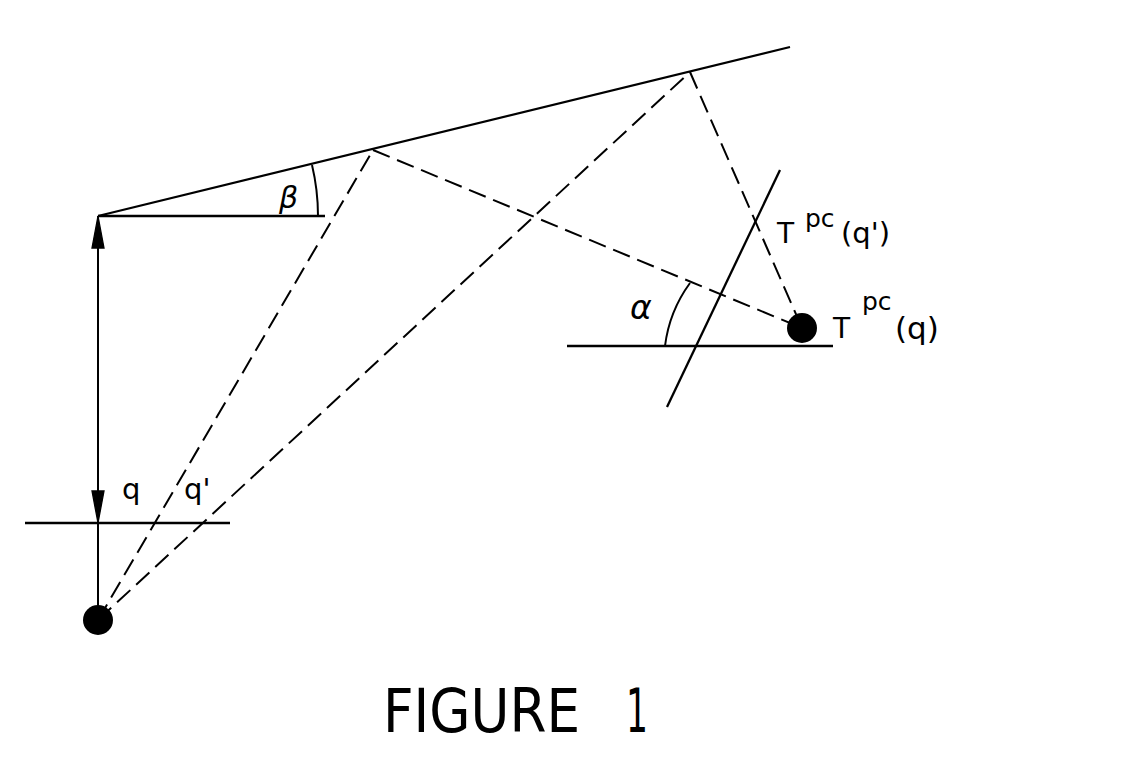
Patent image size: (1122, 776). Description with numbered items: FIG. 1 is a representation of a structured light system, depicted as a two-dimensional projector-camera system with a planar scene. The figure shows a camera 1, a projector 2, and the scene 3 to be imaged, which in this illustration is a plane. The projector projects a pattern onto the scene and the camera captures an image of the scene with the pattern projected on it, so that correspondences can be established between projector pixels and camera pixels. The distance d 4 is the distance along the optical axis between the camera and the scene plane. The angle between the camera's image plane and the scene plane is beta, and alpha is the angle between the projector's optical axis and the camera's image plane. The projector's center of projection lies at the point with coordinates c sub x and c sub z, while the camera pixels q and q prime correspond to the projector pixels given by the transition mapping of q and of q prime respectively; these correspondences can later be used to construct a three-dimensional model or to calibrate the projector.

The camera 1 is at (198, 571).
The projector 2 is at (740, 313).
The scene 3 is at (444, 131).
The distance d 4 is at (83, 418).